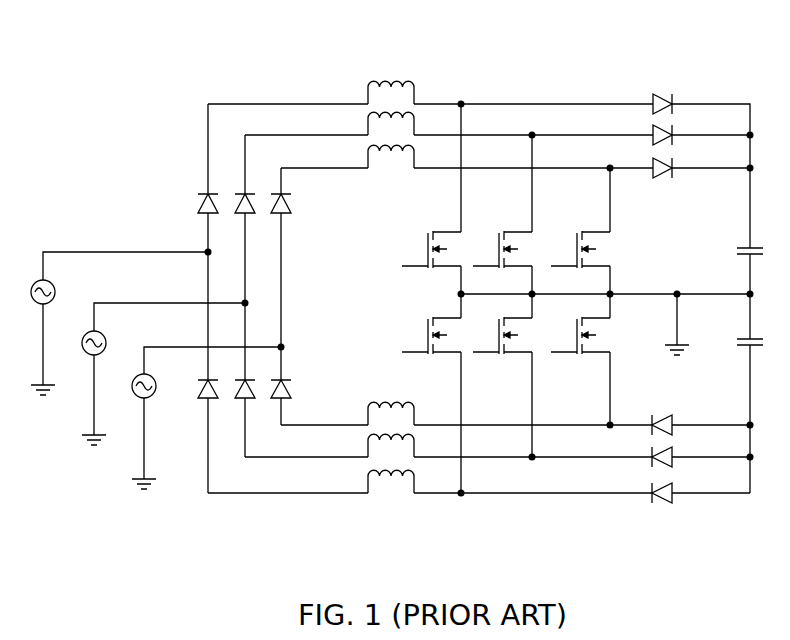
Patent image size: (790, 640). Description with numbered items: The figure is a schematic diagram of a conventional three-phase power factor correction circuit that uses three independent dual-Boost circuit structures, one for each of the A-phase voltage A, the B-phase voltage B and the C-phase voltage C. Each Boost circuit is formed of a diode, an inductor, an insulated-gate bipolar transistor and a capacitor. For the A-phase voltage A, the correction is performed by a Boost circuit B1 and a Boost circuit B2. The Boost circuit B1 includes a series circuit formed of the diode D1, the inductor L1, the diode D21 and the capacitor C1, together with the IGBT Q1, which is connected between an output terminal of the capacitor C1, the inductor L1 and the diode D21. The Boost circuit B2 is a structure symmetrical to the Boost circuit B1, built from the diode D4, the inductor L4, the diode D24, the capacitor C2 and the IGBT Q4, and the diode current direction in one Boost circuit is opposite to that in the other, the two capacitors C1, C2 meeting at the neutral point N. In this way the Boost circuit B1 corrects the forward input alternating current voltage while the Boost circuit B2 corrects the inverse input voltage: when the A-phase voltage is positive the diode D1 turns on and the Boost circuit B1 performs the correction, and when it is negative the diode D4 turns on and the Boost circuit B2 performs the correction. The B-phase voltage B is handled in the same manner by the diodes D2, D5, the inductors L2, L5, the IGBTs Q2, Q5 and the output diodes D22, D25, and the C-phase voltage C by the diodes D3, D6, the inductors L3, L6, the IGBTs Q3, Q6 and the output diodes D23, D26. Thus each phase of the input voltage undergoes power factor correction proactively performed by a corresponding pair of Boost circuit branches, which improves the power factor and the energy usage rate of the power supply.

The A-phase voltage A is at (113, 323).
The B-phase voltage B is at (157, 374).
The C-phase voltage C is at (200, 418).
The diode D1 is at (215, 194).
The diode D2 is at (251, 194).
The diode D3 is at (288, 194).
The diode D4 is at (215, 382).
The diode D5 is at (251, 382).
The diode D6 is at (288, 382).
The inductor L1 is at (391, 85).
The inductor L2 is at (391, 116).
The inductor L3 is at (391, 149).
The inductor L4 is at (391, 473).
The inductor L5 is at (391, 438).
The inductor L6 is at (391, 406).
The insulated-gate bipolar transistor Q1 is at (431, 241).
The insulated-gate bipolar transistor Q2 is at (502, 241).
The insulated-gate bipolar transistor Q3 is at (580, 241).
The insulated-gate bipolar transistor Q4 is at (431, 326).
The insulated-gate bipolar transistor Q5 is at (502, 326).
The insulated-gate bipolar transistor Q6 is at (580, 326).
The diode D21 is at (677, 111).
The diode D22 is at (677, 142).
The diode D23 is at (677, 175).
The diode D24 is at (677, 487).
The diode D25 is at (677, 452).
The diode D26 is at (677, 419).
The capacitor C1 is at (755, 241).
The capacitor C2 is at (755, 332).
The neutral point N is at (682, 324).
The Boost circuit B1 is at (350, 89).
The Boost circuit B2 is at (312, 504).